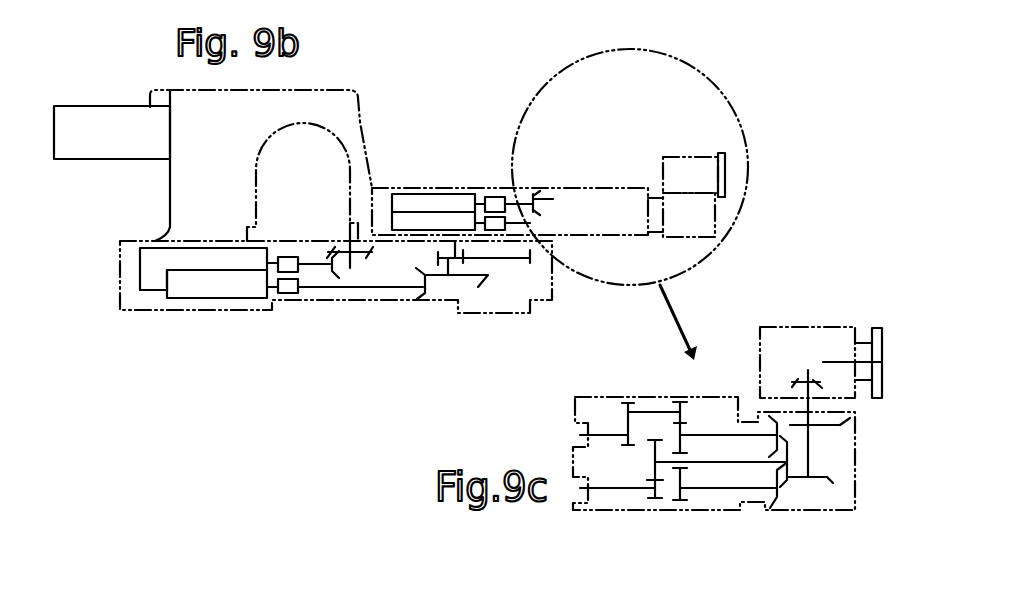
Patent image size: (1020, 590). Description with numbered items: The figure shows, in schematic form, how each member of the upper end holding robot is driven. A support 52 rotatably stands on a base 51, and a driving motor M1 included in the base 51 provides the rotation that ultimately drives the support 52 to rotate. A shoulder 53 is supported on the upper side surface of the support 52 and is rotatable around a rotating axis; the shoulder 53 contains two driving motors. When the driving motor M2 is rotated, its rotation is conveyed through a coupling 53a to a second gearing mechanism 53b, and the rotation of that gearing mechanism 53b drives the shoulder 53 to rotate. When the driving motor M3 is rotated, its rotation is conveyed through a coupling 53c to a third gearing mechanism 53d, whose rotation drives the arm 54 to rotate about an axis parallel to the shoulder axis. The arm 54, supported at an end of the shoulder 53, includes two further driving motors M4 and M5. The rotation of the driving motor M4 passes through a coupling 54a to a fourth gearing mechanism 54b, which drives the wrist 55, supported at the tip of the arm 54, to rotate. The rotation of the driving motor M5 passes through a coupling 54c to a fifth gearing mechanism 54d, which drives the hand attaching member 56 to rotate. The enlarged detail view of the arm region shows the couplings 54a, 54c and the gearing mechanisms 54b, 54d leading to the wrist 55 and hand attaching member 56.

In FIG. 9B, the base 51 is at (356, 90).
In FIG. 9B, the support 52 is at (337, 133).
In FIG. 9B, the shoulder 53 is at (342, 303).
In FIG. 9B, the coupling 53a is at (297, 268).
In FIG. 9B, the second gearing mechanism 53b is at (353, 268).
In FIG. 9B, the coupling 53c is at (290, 298).
In FIG. 9B, the third gearing mechanism 53d is at (502, 283).
In FIG. 9B, the arm 54 is at (473, 187).
In FIG. 9B, the coupling 54a is at (505, 192).
In FIG. 9C, the coupling 54a is at (588, 423).
In FIG. 9C, the fourth gearing mechanism 54b is at (706, 408).
In FIG. 9B, the coupling 54c is at (507, 190).
In FIG. 9C, the coupling 54c is at (587, 503).
In FIG. 9C, the fifth gearing mechanism 54d is at (791, 500).
In FIG. 9B, the wrist 55 is at (678, 157).
In FIG. 9C, the wrist 55 is at (786, 327).
In FIG. 9B, the hand attaching member 56 is at (725, 168).
In FIG. 9C, the hand attaching member 56 is at (877, 328).
In FIG. 9B, the driving motor M1 is at (90, 117).
In FIG. 9B, the driving motor M2 is at (147, 262).
In FIG. 9B, the driving motor M3 is at (200, 295).
In FIG. 9B, the driving motor M4 is at (448, 207).
In FIG. 9B, the driving motor M5 is at (410, 213).